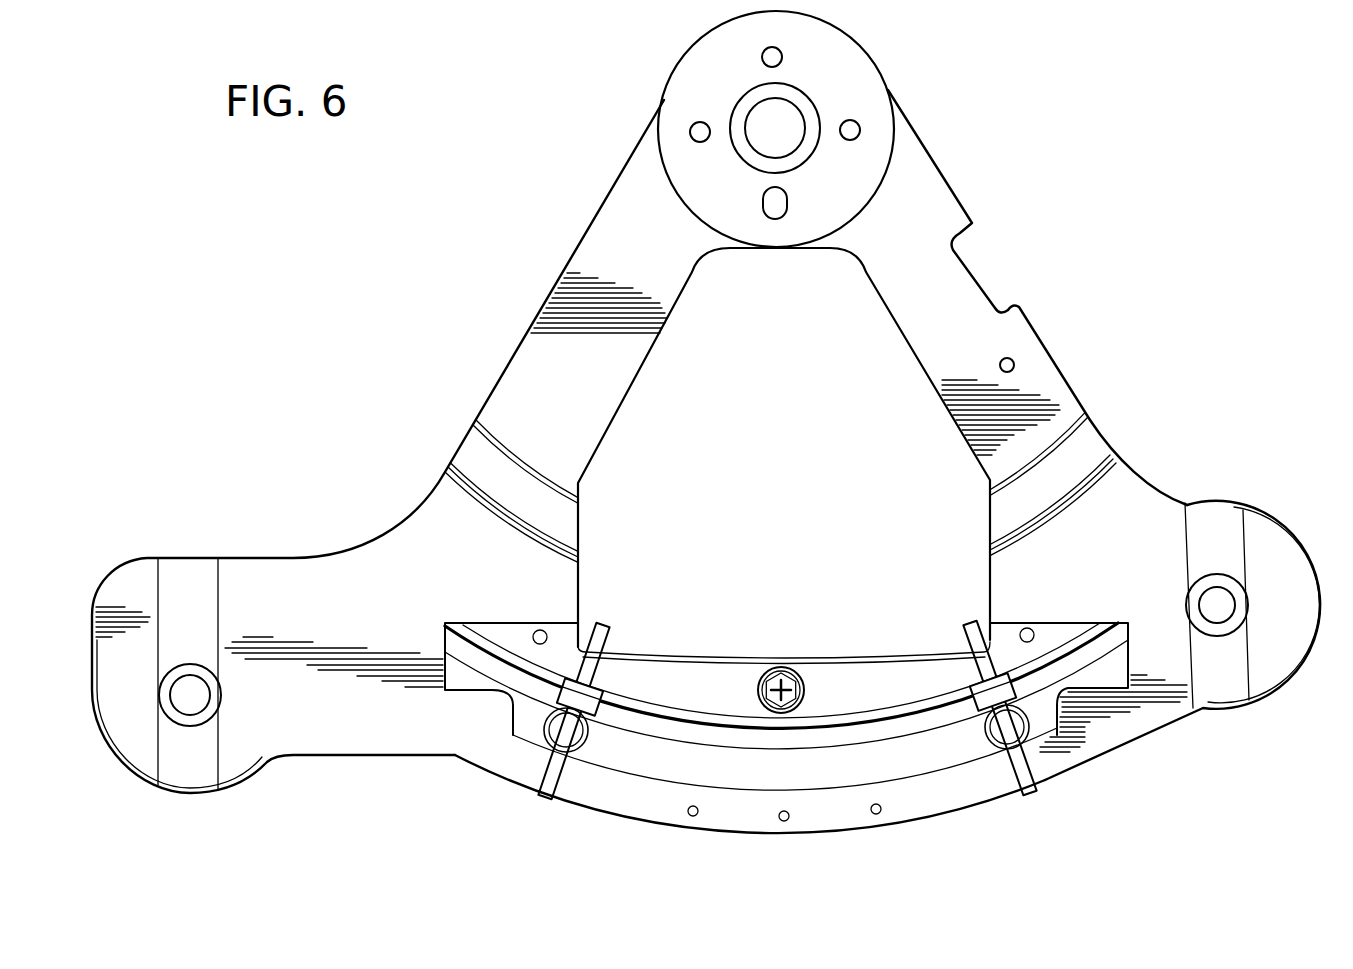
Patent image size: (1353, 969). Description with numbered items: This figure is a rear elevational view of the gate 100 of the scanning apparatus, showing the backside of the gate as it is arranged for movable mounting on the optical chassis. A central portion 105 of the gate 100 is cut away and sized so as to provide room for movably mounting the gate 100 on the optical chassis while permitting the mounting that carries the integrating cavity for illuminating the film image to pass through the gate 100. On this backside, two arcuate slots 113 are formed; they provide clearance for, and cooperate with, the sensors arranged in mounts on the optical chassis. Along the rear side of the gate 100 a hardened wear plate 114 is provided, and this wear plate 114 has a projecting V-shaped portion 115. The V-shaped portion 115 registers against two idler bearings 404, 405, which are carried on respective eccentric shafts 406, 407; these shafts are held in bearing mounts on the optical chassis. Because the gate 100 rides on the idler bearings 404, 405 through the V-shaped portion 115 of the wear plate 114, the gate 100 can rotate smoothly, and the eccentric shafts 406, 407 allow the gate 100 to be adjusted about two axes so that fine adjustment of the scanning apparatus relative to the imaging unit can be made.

The gate 100 is at (421, 265).
The central portion 105 is at (823, 474).
The arcuate slots 113 is at (473, 448).
The hardened wear plate 114 is at (908, 768).
The V-shaped portion 115 is at (893, 712).
The idler bearing 404 is at (972, 704).
The idler bearing 405 is at (596, 720).
The eccentric shaft 406 is at (1034, 788).
The eccentric shaft 407 is at (542, 795).